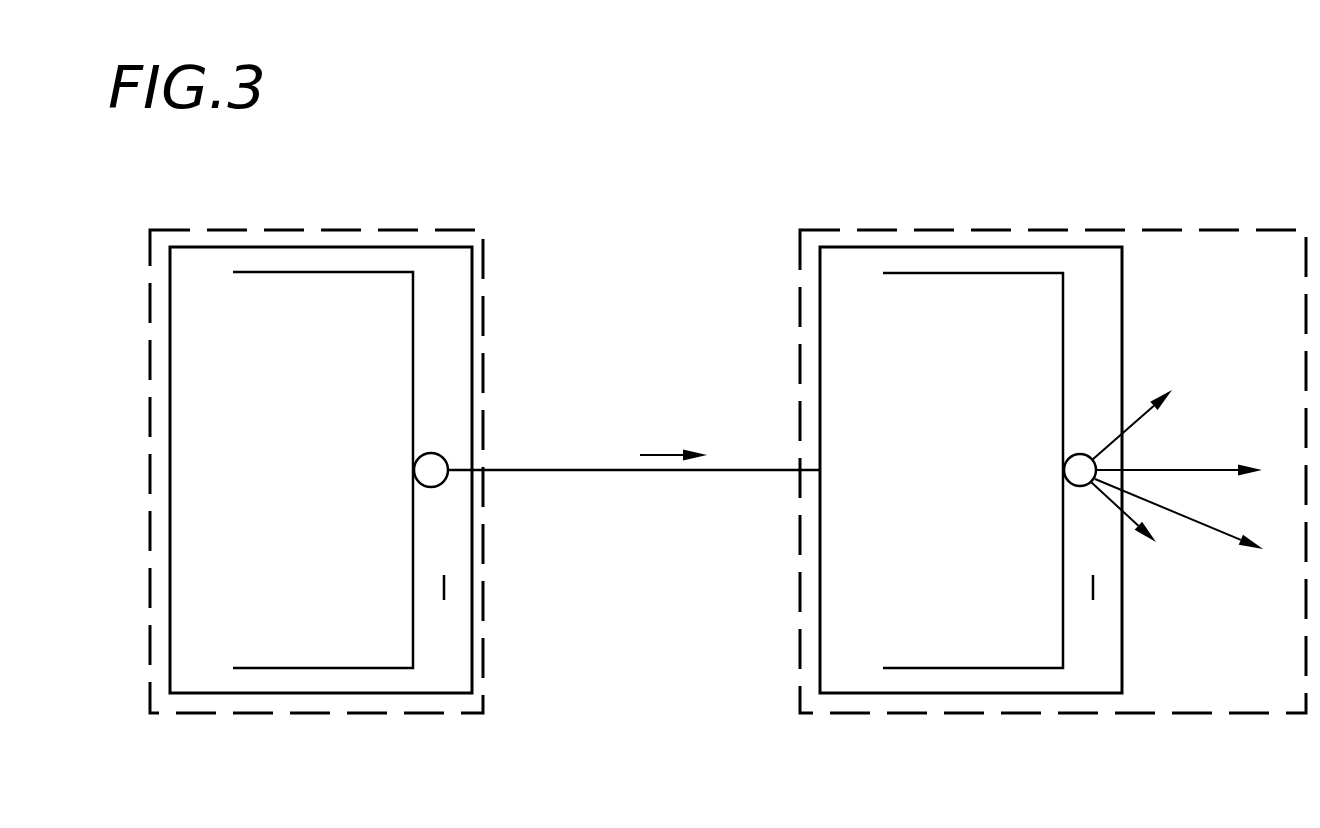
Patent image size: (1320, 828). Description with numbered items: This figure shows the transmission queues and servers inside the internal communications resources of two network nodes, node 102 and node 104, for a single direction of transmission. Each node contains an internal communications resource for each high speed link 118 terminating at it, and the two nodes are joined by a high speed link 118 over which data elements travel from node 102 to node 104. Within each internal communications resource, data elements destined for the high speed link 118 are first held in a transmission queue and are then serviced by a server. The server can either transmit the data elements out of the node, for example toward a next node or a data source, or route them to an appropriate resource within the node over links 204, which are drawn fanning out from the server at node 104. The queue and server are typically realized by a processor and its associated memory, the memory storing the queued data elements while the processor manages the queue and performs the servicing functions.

The node 102 is at (460, 230).
The node 104 is at (1108, 230).
The high speed link 118 is at (594, 470).
The links 204 is at (1176, 388).